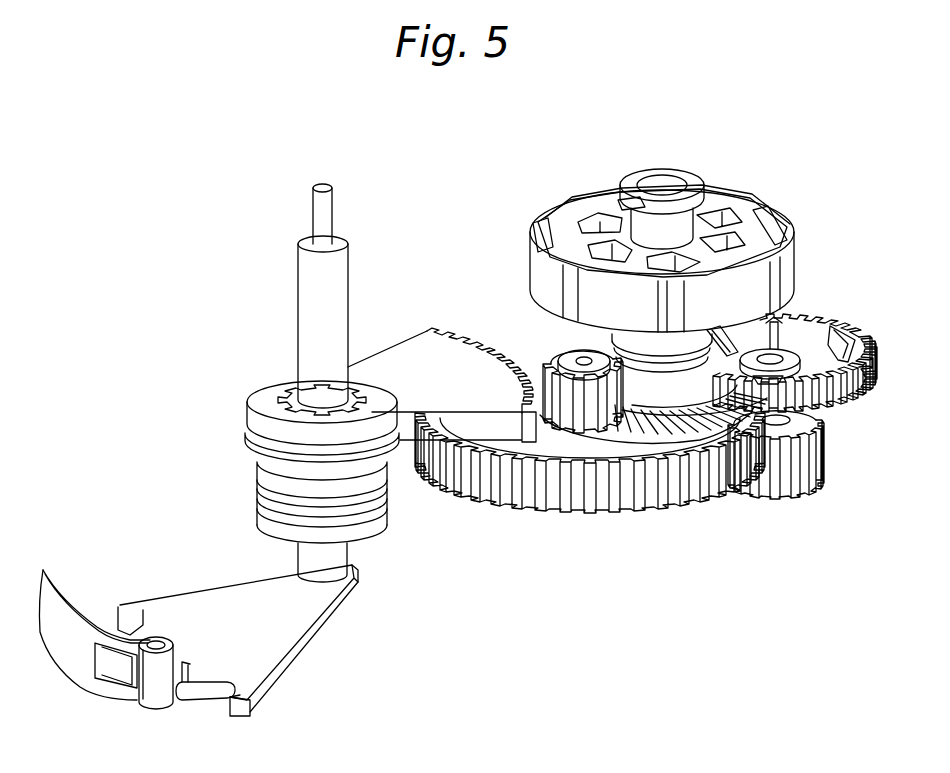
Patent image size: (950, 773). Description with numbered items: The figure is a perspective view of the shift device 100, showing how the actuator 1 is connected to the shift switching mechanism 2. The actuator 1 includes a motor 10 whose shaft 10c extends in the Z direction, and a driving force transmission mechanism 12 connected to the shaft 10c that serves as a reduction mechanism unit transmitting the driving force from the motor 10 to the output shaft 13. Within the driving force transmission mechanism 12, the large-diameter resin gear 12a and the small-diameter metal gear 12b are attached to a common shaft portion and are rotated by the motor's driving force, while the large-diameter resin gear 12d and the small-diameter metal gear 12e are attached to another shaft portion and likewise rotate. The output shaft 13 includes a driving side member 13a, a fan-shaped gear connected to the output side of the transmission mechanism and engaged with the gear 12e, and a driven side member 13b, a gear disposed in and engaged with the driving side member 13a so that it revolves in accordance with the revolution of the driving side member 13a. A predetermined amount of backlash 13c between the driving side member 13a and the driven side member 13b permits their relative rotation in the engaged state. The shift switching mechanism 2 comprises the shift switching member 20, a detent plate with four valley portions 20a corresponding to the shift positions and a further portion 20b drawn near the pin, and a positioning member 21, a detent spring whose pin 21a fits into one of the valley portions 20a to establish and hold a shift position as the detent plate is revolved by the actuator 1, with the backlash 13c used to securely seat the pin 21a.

The shift device 100 is at (240, 128).
The actuator 1 is at (520, 168).
The motor 10 is at (762, 193).
The shaft 10c is at (700, 180).
The driving force transmission mechanism 12 is at (765, 542).
The gear 12a is at (805, 318).
The gear 12b is at (812, 490).
The gear 12d is at (632, 505).
The gear 12e is at (535, 352).
The output shaft 13 is at (330, 178).
The driving side member 13a is at (428, 330).
The driven side member 13b is at (278, 392).
The backlash 13c is at (362, 388).
The shift switching mechanism 2 is at (118, 550).
The shift switching member 20 is at (228, 575).
The valley portion 20a is at (233, 690).
The bar 20b is at (190, 680).
The positioning member 21 is at (80, 615).
The pin 21a is at (148, 678).